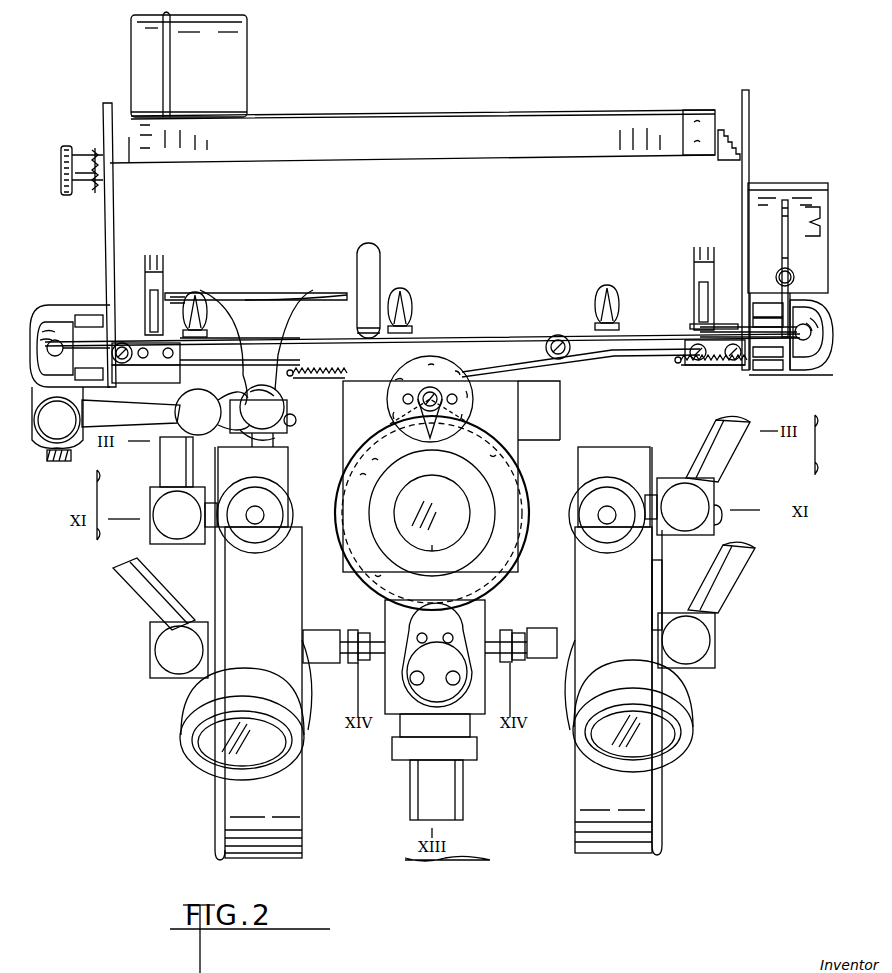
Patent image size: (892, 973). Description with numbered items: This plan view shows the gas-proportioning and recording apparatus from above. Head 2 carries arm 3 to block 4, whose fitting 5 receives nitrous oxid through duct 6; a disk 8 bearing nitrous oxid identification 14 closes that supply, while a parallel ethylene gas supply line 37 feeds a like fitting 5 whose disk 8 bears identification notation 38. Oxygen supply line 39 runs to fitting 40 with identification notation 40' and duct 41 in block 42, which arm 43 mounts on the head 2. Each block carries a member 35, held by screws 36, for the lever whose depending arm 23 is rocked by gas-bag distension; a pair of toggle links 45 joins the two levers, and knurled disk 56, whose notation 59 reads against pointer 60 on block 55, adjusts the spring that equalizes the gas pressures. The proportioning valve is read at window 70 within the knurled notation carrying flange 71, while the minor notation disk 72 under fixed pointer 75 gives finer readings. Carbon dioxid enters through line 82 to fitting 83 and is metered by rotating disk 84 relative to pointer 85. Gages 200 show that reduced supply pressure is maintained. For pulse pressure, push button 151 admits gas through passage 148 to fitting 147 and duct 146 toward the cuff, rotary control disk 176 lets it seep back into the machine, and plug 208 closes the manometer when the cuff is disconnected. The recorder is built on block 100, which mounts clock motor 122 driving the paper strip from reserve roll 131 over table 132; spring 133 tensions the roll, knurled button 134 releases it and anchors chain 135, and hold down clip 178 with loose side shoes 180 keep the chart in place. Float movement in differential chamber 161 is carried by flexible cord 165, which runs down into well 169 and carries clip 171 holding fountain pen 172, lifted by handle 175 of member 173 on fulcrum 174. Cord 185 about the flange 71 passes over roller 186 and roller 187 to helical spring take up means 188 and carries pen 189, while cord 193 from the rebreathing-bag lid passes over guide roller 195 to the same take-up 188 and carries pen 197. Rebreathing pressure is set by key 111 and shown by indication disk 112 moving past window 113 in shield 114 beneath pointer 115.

The clock motor 122 is at (228, 105).
The table 132 is at (522, 160).
The reserve roll 131 is at (385, 152).
The spring 133 is at (728, 130).
The chain 135 is at (113, 218).
The knurled button 134 is at (128, 212).
The shield 114 is at (762, 180).
The window 113 is at (815, 205).
The key 111 is at (782, 245).
The pointer 115 is at (805, 222).
The indication disk 112 is at (817, 238).
The well 169 is at (802, 370).
The block 100 is at (463, 350).
The roller 187 is at (135, 333).
The cord 193 is at (635, 360).
The guide roller 195 is at (728, 325).
The roller 186 is at (573, 317).
The cord 185 is at (520, 367).
The helical spring take up means 188 is at (310, 374).
The fulcrum 174 is at (256, 351).
The fountain pen 172 is at (207, 300).
The pen 189 is at (405, 302).
The pen 197 is at (607, 290).
The hold down clip 178 is at (372, 258).
The loose side shoes 180 is at (160, 268).
The differential chamber 161 is at (62, 304).
The duct 146 is at (155, 418).
The plug 208 is at (50, 461).
The handle 175 is at (210, 402).
The flexible cord 165 is at (252, 343).
The member 173 is at (318, 282).
The clip 171 is at (198, 328).
The fitting 147 is at (285, 402).
The rotary control disk 176 is at (250, 416).
The arm 43 is at (560, 446).
The minor notation disk 72 is at (456, 398).
The fixed pointer 75 is at (420, 428).
The notation carrying flange 71 is at (528, 522).
The window 70 is at (462, 500).
The passage 148 is at (238, 482).
The block 4 is at (232, 576).
The block 42 is at (636, 572).
The duct 41 is at (665, 614).
The push button 151 is at (263, 512).
The nitrous oxid identification 14 is at (187, 545).
The fitting 5 is at (150, 488).
The disk 8 is at (156, 522).
The duct 6 is at (165, 456).
The ethylene gas supply line 37 is at (136, 606).
The identification notation 38 is at (165, 665).
The fitting 83 is at (718, 486).
The disk 84 is at (678, 488).
The pointer 85 is at (714, 508).
The line 82 is at (733, 466).
The fitting 40 is at (709, 640).
The identification notation 40' is at (736, 654).
The oxygen supply line 39 is at (732, 578).
The head 2 is at (385, 604).
The arm 3 is at (330, 568).
The notation 59 is at (462, 660).
The pointer 60 is at (432, 645).
The block 55 is at (452, 622).
The knurled disk 56 is at (417, 713).
The member 35 is at (328, 663).
The depending arm 23 is at (375, 650).
The links 45 is at (380, 662).
The screws 36 is at (310, 712).
The gages 200 is at (217, 765).